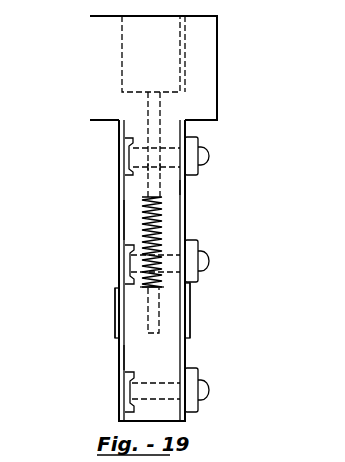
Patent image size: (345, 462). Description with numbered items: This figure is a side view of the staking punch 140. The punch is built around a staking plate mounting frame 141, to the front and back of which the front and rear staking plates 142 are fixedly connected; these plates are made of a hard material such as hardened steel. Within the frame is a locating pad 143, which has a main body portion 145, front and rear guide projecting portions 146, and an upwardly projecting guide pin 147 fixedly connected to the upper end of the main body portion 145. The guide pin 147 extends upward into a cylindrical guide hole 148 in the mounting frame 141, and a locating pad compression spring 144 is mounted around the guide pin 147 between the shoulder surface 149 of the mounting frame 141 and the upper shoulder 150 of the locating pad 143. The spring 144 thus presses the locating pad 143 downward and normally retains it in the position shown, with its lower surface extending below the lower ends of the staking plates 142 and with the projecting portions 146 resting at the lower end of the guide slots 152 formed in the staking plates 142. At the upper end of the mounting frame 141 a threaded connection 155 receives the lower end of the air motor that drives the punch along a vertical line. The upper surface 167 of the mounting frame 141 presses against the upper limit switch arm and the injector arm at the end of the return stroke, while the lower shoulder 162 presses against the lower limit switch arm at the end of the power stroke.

The staking punch 140 is at (224, 78).
The lower shoulder 162 is at (100, 122).
The threaded connection 155 is at (125, 20).
The upper surface 167 is at (197, 18).
The cylindrical guide hole 148 is at (158, 109).
The guide pin 147 is at (148, 185).
The staking plate mounting frame 141 is at (170, 188).
The staking plates 142 is at (126, 230).
The locating pad compression spring 144 is at (168, 227).
The shoulder surface 149 is at (147, 200).
The upper shoulder 150 is at (148, 289).
The guide slots 152 is at (118, 303).
The guide projecting portions 146 is at (118, 326).
The main body portion 145 is at (133, 358).
The locating pad 143 is at (170, 360).